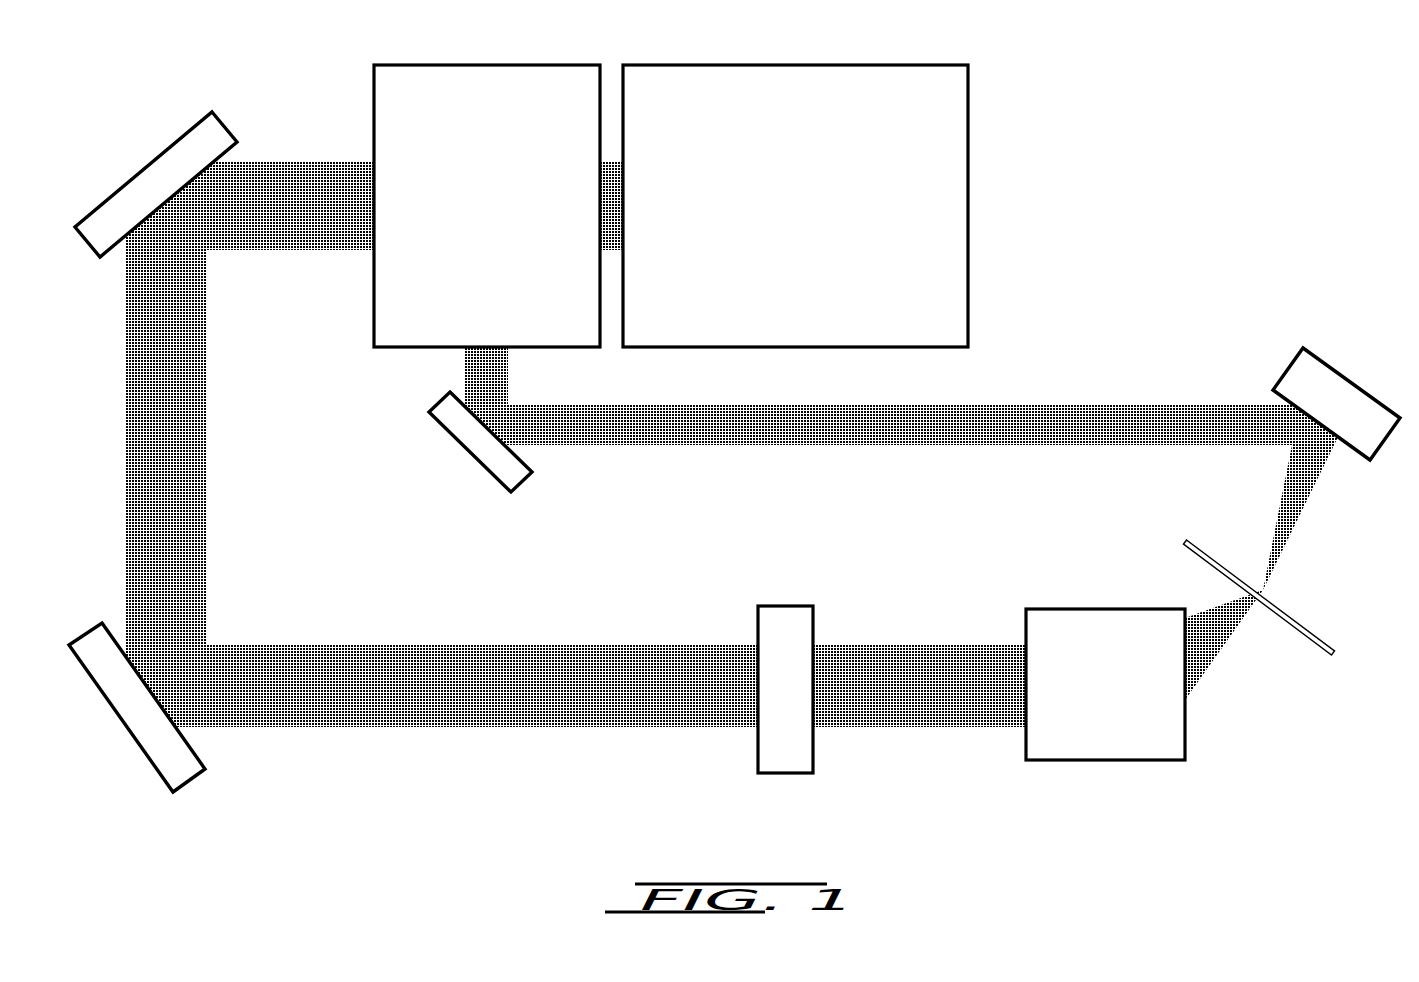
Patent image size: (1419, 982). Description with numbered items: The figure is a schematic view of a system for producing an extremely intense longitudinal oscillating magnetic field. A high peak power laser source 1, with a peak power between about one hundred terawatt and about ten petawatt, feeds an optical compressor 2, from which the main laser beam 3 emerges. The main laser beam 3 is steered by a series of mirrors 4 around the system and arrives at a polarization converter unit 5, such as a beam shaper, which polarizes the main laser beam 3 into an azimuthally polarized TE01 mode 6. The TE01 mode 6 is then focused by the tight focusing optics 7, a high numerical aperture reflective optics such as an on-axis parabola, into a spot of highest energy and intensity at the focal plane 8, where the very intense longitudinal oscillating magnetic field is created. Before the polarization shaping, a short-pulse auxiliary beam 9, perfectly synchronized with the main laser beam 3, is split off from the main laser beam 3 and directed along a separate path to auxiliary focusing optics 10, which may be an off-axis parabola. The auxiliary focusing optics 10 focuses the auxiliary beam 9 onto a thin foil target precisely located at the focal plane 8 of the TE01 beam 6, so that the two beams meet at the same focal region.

The high peak power laser source 1 is at (797, 90).
The optical compressor 2 is at (487, 90).
The main laser beam 3 is at (292, 175).
The mirrors 4 is at (150, 180).
The polarization converter unit 5 is at (787, 754).
The azimuthally polarized TE01 mode 6 is at (920, 695).
The tight focusing optics 7 is at (1108, 737).
The focal plane 8 is at (1336, 656).
The short-pulse auxiliary beam 9 is at (875, 430).
The auxiliary focusing optics 10 is at (1340, 398).